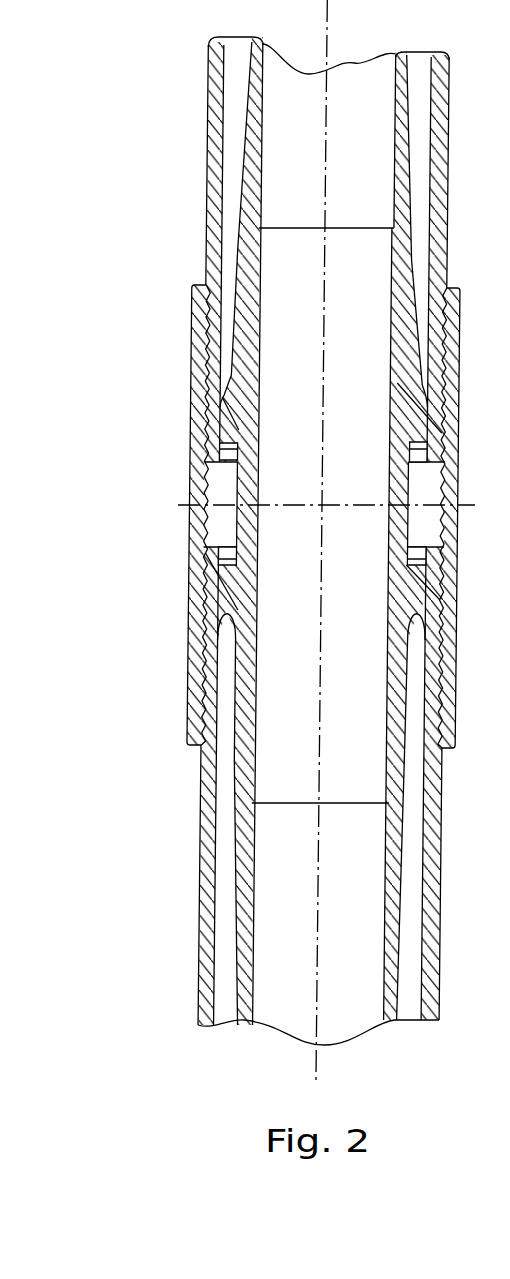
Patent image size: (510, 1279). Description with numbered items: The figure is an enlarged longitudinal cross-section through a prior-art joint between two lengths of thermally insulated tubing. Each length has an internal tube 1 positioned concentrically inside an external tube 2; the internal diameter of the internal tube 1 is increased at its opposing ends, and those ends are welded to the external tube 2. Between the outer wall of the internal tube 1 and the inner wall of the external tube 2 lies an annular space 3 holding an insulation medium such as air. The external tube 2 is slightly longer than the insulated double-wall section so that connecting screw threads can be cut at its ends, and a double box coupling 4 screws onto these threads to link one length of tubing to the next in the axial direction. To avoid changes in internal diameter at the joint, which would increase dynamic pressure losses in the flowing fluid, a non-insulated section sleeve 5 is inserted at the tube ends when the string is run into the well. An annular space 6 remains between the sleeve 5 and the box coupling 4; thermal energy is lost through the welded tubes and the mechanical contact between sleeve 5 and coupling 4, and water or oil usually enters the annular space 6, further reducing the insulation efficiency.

The internal tube 1 is at (257, 130).
The external tube 2 is at (215, 188).
The annular space 3 is at (232, 263).
The double box coupling 4 is at (200, 577).
The non-insulated section sleeve 5 is at (247, 497).
The annular space 6 is at (223, 480).